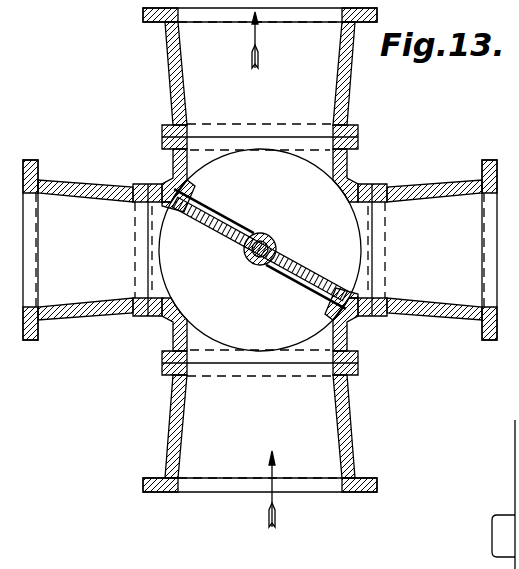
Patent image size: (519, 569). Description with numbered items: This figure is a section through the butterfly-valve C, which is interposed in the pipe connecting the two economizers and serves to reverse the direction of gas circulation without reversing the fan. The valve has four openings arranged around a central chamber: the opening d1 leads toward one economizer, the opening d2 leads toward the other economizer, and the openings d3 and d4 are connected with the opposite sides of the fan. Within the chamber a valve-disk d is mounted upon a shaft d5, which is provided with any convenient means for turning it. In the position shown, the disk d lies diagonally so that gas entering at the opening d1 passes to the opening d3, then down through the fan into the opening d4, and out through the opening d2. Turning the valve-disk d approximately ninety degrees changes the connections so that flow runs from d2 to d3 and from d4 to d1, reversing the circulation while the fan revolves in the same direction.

The butterfly-valve c is at (260, 250).
The valve-disk d is at (231, 239).
The opening d1 is at (427, 250).
The opening d2 is at (92, 250).
The opening d3 is at (260, 79).
The opening d4 is at (260, 438).
The shaft d5 is at (279, 248).